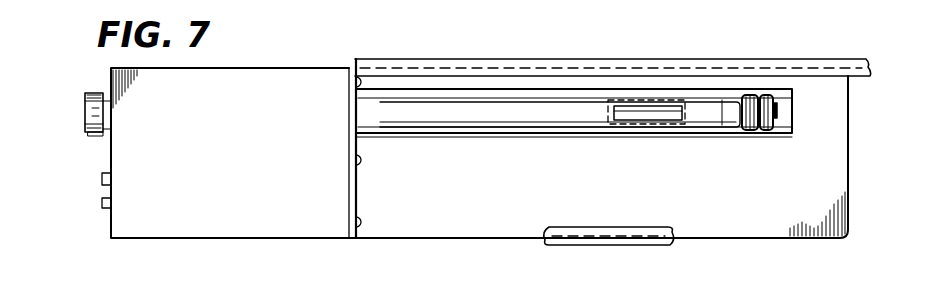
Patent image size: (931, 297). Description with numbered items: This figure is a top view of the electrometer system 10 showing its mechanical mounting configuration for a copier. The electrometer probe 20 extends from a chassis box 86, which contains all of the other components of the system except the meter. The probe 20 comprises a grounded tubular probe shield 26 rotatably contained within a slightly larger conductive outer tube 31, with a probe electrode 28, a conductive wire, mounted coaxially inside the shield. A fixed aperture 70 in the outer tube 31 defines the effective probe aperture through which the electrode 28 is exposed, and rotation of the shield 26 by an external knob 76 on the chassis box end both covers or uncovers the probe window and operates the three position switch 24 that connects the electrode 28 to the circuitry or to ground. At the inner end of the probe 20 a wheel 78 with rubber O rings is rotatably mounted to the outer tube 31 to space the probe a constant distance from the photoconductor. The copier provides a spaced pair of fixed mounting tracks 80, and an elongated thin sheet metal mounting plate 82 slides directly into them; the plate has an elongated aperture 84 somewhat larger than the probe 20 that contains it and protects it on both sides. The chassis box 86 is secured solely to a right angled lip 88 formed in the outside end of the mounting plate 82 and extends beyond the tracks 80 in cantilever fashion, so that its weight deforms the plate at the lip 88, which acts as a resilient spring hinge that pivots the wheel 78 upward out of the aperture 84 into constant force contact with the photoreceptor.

The electrometer system 10 is at (431, 23).
The electrometer probe 20 is at (467, 108).
The three position switch 24 is at (86, 95).
The probe shield 26 is at (643, 118).
The probe electrode 28 is at (668, 116).
The outer tube 31 is at (517, 120).
The fixed aperture 70 is at (620, 117).
The external knob 76 is at (89, 134).
The wheel 78 is at (750, 133).
The mounting tracks 80 is at (614, 58).
The mounting plate 82 is at (403, 230).
The elongated aperture 84 is at (782, 127).
The chassis box 86 is at (245, 228).
The right angled lip 88 is at (350, 187).